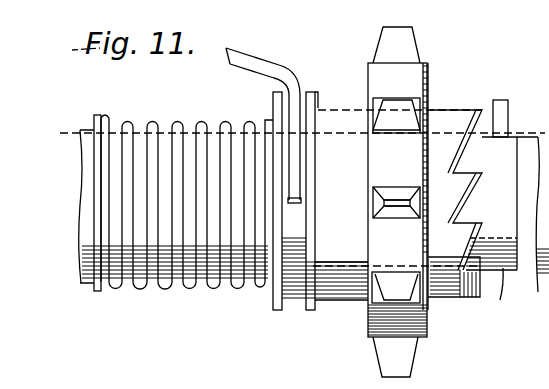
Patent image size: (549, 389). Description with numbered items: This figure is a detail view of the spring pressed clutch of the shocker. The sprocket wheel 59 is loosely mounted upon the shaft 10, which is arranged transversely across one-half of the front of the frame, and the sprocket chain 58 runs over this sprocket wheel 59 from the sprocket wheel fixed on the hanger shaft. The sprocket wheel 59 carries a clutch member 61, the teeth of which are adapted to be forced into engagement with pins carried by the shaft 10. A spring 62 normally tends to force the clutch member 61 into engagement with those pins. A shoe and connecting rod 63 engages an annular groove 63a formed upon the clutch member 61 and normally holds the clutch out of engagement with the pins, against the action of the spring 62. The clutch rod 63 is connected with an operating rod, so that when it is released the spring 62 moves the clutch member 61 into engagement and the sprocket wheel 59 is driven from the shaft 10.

The shaft 10 is at (470, 328).
The sprocket chain 58 is at (543, 280).
The sprocket wheel 59 is at (424, 329).
The clutch member 61 is at (453, 110).
The spring 62 is at (198, 277).
The shoe and connecting rod 63 is at (288, 71).
The annular groove 63a is at (297, 287).